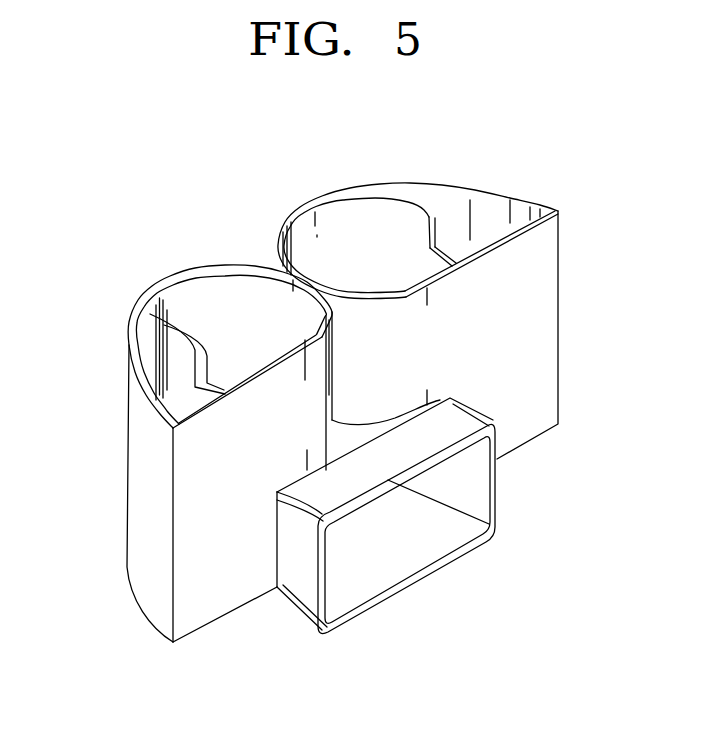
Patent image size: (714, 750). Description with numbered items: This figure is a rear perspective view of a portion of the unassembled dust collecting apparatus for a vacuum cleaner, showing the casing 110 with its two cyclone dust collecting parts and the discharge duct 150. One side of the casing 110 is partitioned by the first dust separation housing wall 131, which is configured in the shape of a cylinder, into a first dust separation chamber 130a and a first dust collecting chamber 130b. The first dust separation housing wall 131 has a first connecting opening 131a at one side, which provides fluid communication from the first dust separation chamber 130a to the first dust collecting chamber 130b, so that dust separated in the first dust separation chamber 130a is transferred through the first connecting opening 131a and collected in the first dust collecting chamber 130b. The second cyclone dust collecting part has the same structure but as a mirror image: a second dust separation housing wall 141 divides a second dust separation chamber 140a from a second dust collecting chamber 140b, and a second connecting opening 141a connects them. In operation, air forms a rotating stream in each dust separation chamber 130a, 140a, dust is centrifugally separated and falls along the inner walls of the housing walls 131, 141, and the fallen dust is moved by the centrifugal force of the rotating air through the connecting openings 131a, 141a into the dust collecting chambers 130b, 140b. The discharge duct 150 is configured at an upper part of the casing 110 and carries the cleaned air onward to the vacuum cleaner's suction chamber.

The casing 110 is at (540, 360).
The first dust separation chamber 130a is at (337, 249).
The first dust collecting chamber 130b is at (468, 210).
The first dust separation housing wall 131 is at (389, 198).
The first connecting opening 131a is at (443, 260).
The second dust separation chamber 140a is at (244, 303).
The second dust collecting chamber 140b is at (178, 410).
The second dust separation housing wall 141 is at (167, 372).
The second connecting opening 141a is at (160, 322).
The discharge duct 150 is at (307, 593).